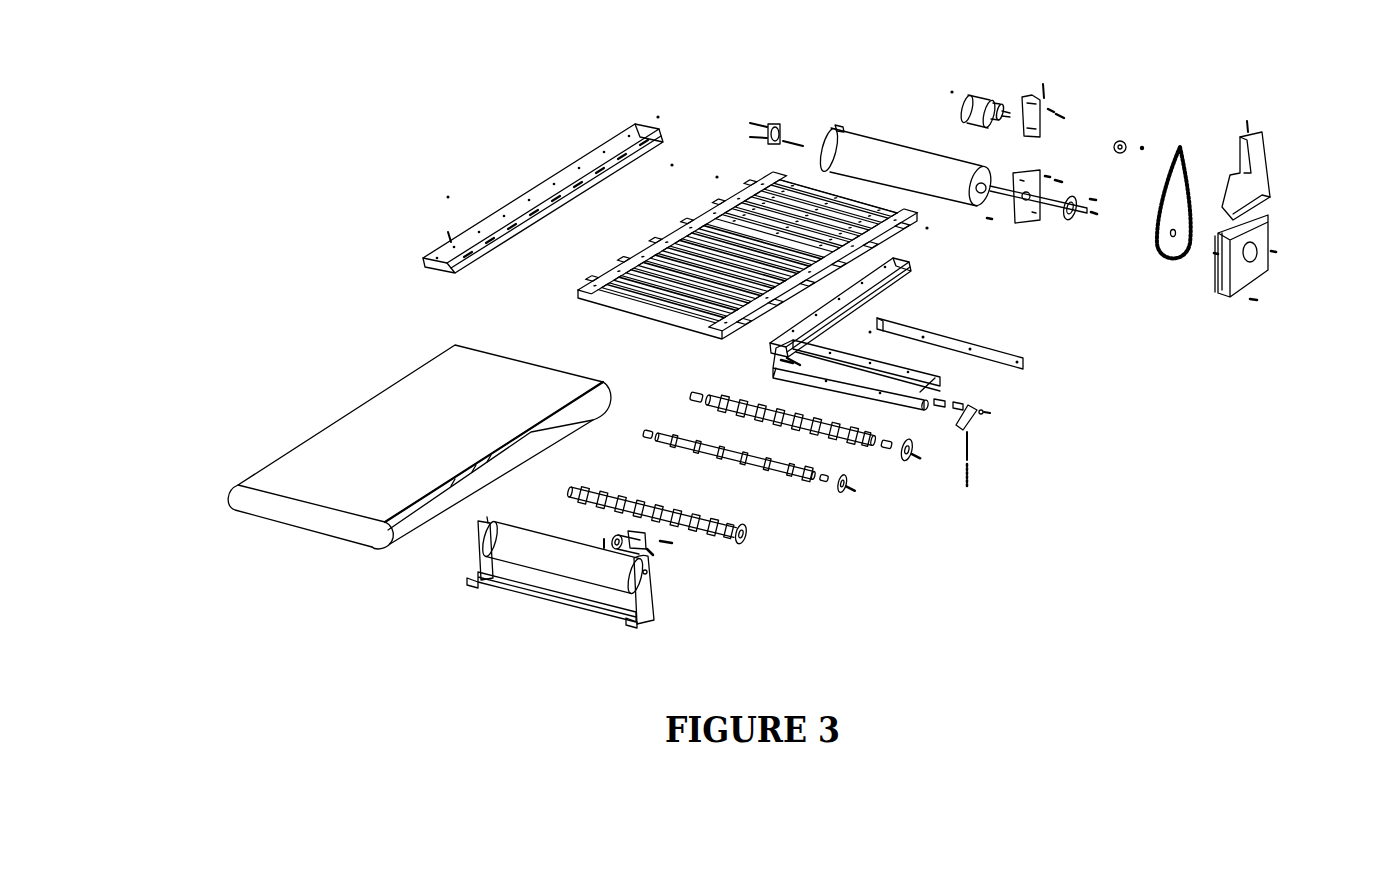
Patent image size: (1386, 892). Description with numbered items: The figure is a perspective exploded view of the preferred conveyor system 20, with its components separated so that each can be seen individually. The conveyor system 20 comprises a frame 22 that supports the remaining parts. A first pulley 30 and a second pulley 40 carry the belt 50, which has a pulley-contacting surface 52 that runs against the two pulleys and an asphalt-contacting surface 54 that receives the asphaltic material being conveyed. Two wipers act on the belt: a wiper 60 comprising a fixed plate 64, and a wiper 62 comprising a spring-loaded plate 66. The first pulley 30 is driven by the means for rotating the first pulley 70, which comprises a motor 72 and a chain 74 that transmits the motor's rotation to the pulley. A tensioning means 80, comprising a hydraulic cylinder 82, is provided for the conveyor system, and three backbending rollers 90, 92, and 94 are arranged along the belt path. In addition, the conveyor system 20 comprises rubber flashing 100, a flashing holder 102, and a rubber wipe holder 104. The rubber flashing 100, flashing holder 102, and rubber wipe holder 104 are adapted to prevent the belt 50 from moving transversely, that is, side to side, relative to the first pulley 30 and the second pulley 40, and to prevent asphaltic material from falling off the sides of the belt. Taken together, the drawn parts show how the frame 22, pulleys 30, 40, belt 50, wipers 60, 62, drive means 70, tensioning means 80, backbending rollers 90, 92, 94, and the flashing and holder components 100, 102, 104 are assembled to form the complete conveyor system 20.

The conveyor system 20 is at (448, 197).
The frame 22 is at (815, 177).
The first pulley 30 is at (882, 133).
The second pulley 40 is at (507, 537).
The belt 50 is at (320, 430).
The pulley-contacting surface 52 is at (557, 417).
The asphalt-contacting surface 54 is at (312, 452).
The wiper 60 is at (1028, 365).
The wiper 62 is at (932, 410).
The fixed plate 64 is at (990, 340).
The spring-loaded plate 66 is at (947, 385).
The means for rotating the first pulley 70 is at (1288, 197).
The motor 72 is at (1040, 107).
The chain 74 is at (1180, 143).
The tensioning means 80 is at (660, 560).
The hydraulic cylinder 82 is at (647, 542).
The backbending roller 90 is at (567, 493).
The backbending roller 92 is at (793, 478).
The backbending roller 94 is at (867, 440).
The rubber flashing 100 is at (730, 192).
The flashing holder 102 is at (613, 133).
The rubber wipe holder 104 is at (903, 280).